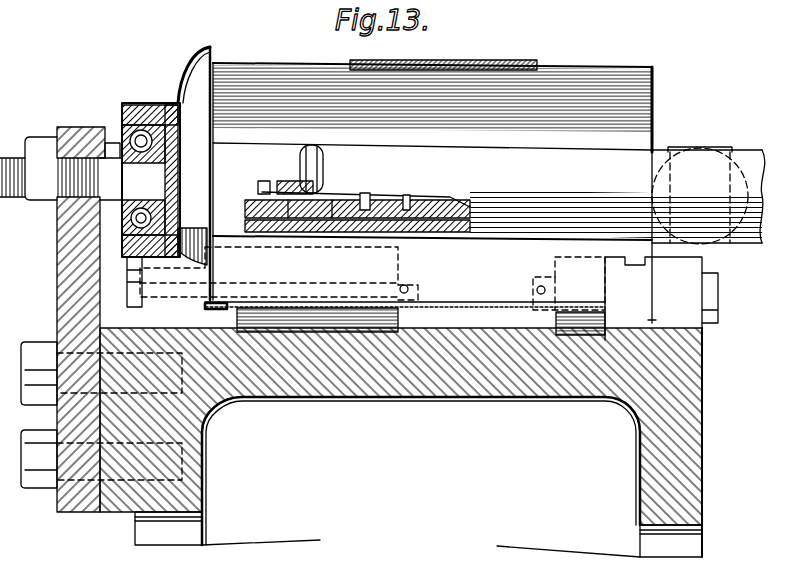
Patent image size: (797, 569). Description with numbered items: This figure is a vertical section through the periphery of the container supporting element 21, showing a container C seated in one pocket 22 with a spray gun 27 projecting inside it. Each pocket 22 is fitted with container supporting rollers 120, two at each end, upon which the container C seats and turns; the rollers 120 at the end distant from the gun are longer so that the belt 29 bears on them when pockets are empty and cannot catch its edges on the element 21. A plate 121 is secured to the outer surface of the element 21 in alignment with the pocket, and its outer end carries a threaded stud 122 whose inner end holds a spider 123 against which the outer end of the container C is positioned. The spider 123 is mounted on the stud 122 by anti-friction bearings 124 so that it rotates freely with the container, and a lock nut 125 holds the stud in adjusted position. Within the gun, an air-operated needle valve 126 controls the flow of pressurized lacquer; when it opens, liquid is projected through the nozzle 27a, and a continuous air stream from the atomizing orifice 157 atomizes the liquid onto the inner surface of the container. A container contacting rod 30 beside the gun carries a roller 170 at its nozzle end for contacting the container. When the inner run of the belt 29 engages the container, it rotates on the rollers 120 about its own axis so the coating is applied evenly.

The container supporting element 21 is at (442, 377).
The pocket 22 is at (490, 337).
The spray gun 27 is at (478, 160).
The nozzle 27a is at (283, 154).
The belt 29 is at (493, 60).
The container contacting rod 30 is at (770, 182).
The container supporting roller 120 is at (357, 322).
The plate 121 is at (57, 306).
The stud 122 is at (16, 200).
The spider 123 is at (143, 103).
The anti-friction bearings 124 is at (141, 128).
The lock nut 125 is at (40, 143).
The needle valve 126 is at (333, 190).
The atomizing orifice 157 is at (262, 194).
The roller 170 is at (713, 128).
The container C is at (588, 75).